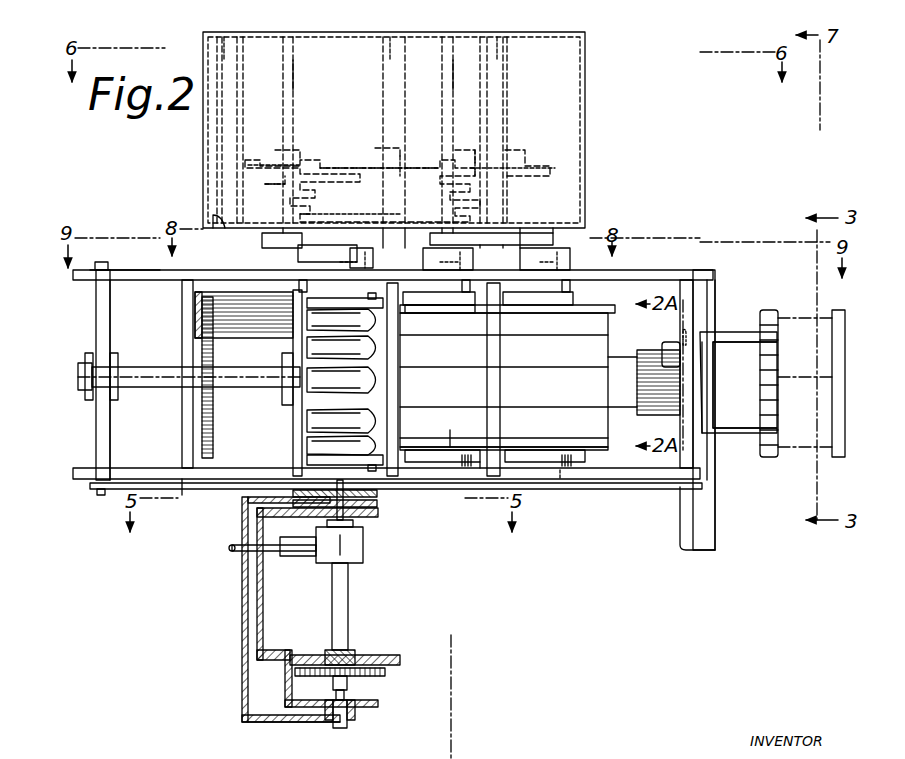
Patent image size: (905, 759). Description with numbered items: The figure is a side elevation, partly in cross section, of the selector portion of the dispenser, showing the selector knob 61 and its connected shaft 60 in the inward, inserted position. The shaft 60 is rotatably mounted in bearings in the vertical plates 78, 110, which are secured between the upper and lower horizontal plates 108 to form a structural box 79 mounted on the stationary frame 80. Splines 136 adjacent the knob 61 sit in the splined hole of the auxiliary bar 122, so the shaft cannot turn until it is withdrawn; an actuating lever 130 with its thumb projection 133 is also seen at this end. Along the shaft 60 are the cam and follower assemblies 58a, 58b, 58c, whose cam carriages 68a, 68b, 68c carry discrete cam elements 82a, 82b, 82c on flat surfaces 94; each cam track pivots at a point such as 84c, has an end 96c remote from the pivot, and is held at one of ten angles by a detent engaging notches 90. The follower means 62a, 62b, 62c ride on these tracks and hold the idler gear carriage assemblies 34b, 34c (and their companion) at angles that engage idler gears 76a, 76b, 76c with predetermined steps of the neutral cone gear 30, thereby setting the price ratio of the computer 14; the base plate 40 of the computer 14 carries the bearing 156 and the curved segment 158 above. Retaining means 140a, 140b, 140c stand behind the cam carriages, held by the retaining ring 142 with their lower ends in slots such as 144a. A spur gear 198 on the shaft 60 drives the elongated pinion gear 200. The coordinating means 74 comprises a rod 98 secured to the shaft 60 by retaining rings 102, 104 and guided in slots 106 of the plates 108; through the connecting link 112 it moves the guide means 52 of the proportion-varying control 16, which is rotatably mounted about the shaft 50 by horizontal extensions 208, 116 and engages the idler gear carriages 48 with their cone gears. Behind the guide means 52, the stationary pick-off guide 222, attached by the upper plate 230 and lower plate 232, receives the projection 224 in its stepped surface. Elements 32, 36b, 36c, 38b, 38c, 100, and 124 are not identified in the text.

The computer 14 is at (596, 166).
The proportion-varying control 16 is at (378, 585).
The neutral cone gear 30 is at (330, 196).
The member 32 is at (388, 45).
The idler gear carriage assembly 34b is at (438, 158).
The idler gear carriage assembly 34c is at (272, 186).
The member 36b is at (452, 78).
The member 36c is at (296, 72).
The member 38b is at (498, 52).
The member 38c is at (224, 45).
The base plate 40 is at (213, 222).
The idler gear carriage 48 is at (365, 557).
The idler gear carriage assembly shaft 50 is at (345, 622).
The guide means 52 is at (242, 688).
The cam and follower assembly 58a is at (585, 310).
The cam and follower assembly 58b is at (478, 470).
The cam and follower assembly 58c is at (305, 453).
The shaft 60 is at (158, 372).
The selector knob 61 is at (780, 318).
The follower means 62a is at (572, 290).
The follower means 62b is at (462, 289).
The follower means 62c is at (372, 289).
The cam carriage 68a is at (605, 447).
The cam carriage 68b is at (450, 440).
The cam carriage 68c is at (300, 437).
The coordinating means 74 is at (112, 406).
The idler gear 76a is at (540, 167).
The idler gear 76b is at (348, 166).
The idler gear 76c is at (250, 162).
The vertical plate 78 is at (710, 460).
The structural box 79 is at (126, 266).
The stationary frame 80 is at (708, 523).
The cam element 82a is at (566, 455).
The cam element 82b is at (440, 305).
The cam element 82c is at (325, 418).
The pivot point 84c is at (307, 338).
The notches 90 is at (380, 362).
The surface 94 is at (604, 321).
The end 96c is at (380, 388).
The rod 98 is at (108, 312).
The bearing 100 is at (80, 370).
The retaining ring 102 is at (120, 395).
The retaining ring 104 is at (90, 392).
The slot 106 is at (158, 265).
The horizontal plate 108 is at (700, 280).
The vertical plate 110 is at (184, 330).
The connecting link 112 is at (182, 492).
The horizontal extension 116 is at (285, 722).
The auxiliary bar 122 is at (684, 300).
The hub 124 is at (612, 340).
The actuating lever 130 is at (716, 330).
The thumb projection 133 is at (735, 333).
The splines 136 is at (648, 414).
The retaining means 140a is at (497, 472).
The retaining means 140b is at (395, 475).
The retaining means 140c is at (296, 300).
The retaining ring 142 is at (288, 400).
The slot 144a is at (565, 480).
The bearing 156 is at (503, 246).
The curved segment 158 is at (473, 160).
The spur gear 198 is at (213, 353).
The elongated pinion gear 200 is at (235, 298).
The horizontal extension 208 is at (248, 497).
The pick-off guide 222 is at (257, 618).
The projection 224 is at (230, 549).
The upper plate 230 is at (380, 515).
The lower plate 232 is at (378, 705).